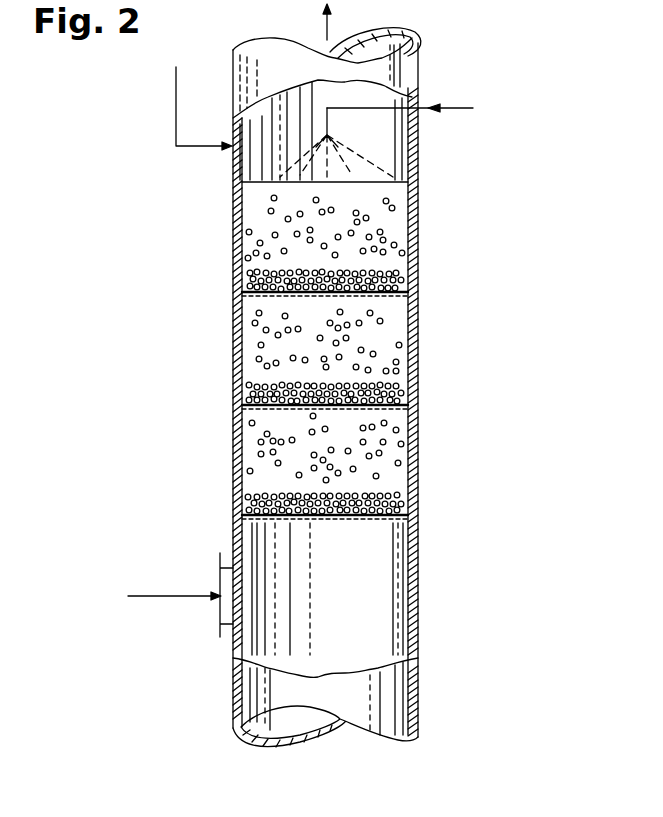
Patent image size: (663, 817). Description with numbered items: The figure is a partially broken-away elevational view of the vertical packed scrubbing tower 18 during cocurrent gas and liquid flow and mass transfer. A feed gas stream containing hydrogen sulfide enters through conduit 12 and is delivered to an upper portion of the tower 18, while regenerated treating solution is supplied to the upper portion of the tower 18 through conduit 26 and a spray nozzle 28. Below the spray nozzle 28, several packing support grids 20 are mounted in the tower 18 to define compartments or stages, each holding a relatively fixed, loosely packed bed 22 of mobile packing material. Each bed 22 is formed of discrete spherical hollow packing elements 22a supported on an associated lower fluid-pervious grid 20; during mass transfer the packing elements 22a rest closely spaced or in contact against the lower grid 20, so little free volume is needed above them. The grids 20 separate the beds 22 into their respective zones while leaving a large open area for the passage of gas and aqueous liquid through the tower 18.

The conduit 12 is at (176, 107).
The packed scrubbing tower 18 is at (455, 70).
The packing support grid 20 is at (412, 292).
The bed of mobile packing material 22 is at (278, 246).
The spherical hollow packing element 22a is at (411, 250).
The conduit 26 is at (462, 108).
The spray nozzle 28 is at (329, 125).